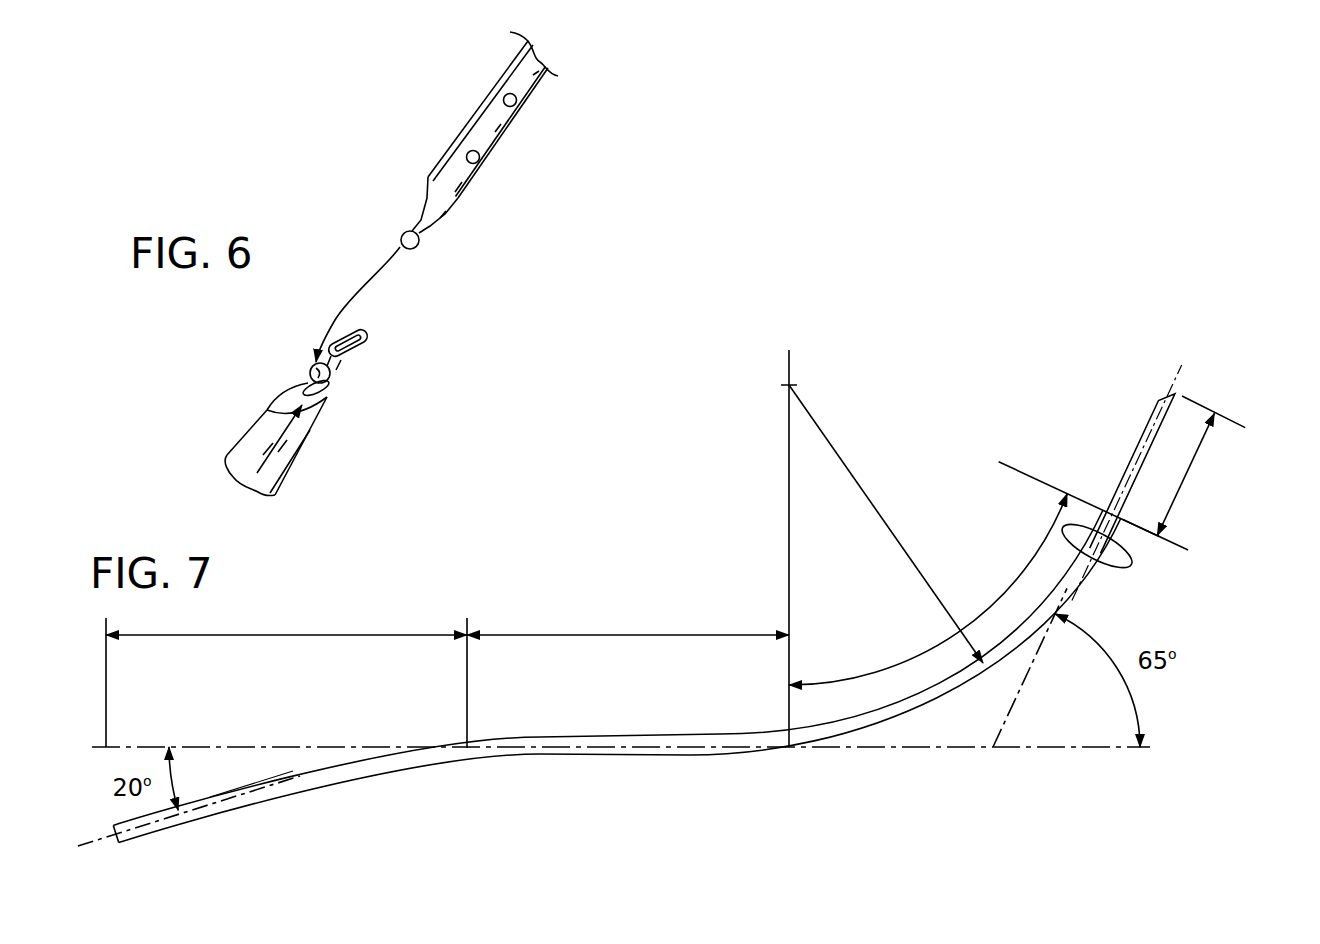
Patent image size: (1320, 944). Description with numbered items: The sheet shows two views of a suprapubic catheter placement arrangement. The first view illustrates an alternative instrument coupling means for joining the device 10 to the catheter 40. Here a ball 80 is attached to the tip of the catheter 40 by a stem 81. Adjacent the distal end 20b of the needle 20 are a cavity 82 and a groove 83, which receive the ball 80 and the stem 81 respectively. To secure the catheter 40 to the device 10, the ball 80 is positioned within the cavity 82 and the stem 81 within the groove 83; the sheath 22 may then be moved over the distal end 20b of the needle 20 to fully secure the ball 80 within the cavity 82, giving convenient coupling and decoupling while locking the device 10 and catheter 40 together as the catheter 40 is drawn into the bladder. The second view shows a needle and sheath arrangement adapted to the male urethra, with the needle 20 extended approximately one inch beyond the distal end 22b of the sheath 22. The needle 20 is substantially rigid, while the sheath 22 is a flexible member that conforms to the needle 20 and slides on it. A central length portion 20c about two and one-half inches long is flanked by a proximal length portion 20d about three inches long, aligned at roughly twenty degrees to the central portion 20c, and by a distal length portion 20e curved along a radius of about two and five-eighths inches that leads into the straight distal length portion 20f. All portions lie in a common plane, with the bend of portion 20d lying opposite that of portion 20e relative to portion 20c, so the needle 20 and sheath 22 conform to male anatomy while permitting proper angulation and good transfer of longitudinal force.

In FIG. 6, the device 10 is at (308, 471).
In FIG. 6, the needle 20 is at (334, 382).
In FIG. 7, the needle 20 is at (1134, 453).
In FIG. 6, the distal end of needle 20b is at (352, 360).
In FIG. 7, the central length portion of needle 20c is at (628, 634).
In FIG. 7, the proximal length portion of needle 20d is at (398, 634).
In FIG. 7, the distal length portion of needle 20e is at (998, 595).
In FIG. 7, the straight distal length portion of needle 20f is at (1186, 474).
In FIG. 6, the sheath 22 is at (245, 432).
In FIG. 7, the sheath 22 is at (606, 757).
In FIG. 6, the distal end of sheath 22b is at (323, 417).
In FIG. 7, the distal end of sheath 22b is at (1131, 566).
In FIG. 6, the catheter 40 is at (514, 133).
In FIG. 6, the ball 80 is at (419, 247).
In FIG. 6, the stem 81 is at (407, 226).
In FIG. 6, the cavity 82 is at (311, 365).
In FIG. 6, the groove 83 is at (333, 347).